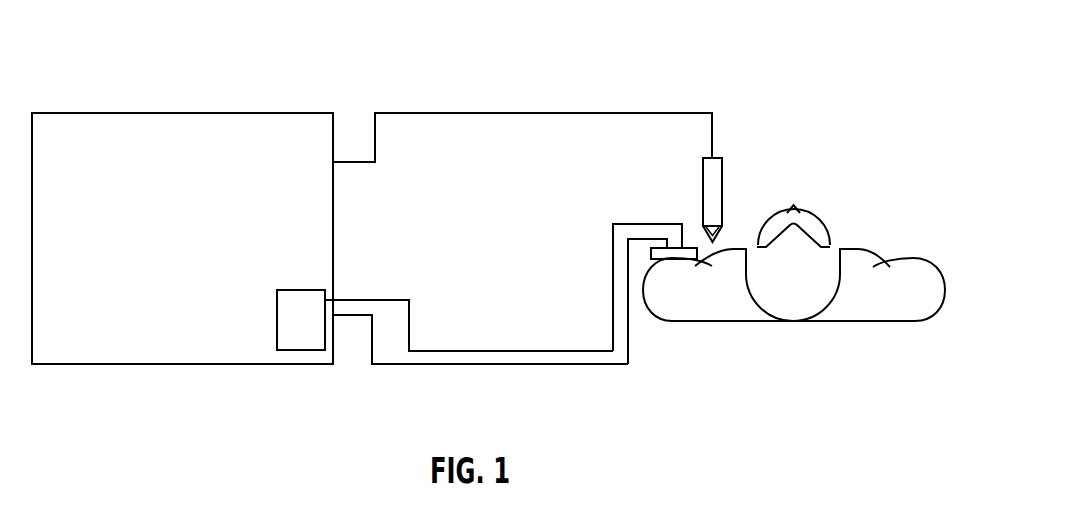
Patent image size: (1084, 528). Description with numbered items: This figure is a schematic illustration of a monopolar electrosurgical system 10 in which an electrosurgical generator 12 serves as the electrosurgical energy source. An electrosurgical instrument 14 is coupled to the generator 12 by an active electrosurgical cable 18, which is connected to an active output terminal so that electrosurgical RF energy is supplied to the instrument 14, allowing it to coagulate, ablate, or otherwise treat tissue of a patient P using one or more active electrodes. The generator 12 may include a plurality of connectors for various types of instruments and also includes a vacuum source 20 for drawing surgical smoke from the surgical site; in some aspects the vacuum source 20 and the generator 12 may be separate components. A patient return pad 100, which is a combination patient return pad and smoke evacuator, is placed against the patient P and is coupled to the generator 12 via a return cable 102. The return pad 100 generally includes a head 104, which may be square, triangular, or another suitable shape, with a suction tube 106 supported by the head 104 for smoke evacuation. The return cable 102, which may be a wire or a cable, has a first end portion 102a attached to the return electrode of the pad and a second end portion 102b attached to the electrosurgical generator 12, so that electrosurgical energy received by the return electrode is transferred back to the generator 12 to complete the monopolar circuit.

The electrosurgical system 10 is at (104, 57).
The electrosurgical generator 12 is at (197, 288).
The electrosurgical instrument 14 is at (723, 193).
The active electrosurgical cable 18 is at (663, 113).
The vacuum source 20 is at (283, 290).
The patient return pad 100 is at (622, 253).
The return cable 102 is at (527, 342).
The first end portion 102a is at (630, 298).
The second end portion 102b is at (353, 315).
The head 104 is at (655, 253).
The suction tube 106 is at (572, 351).
The patient P is at (873, 233).